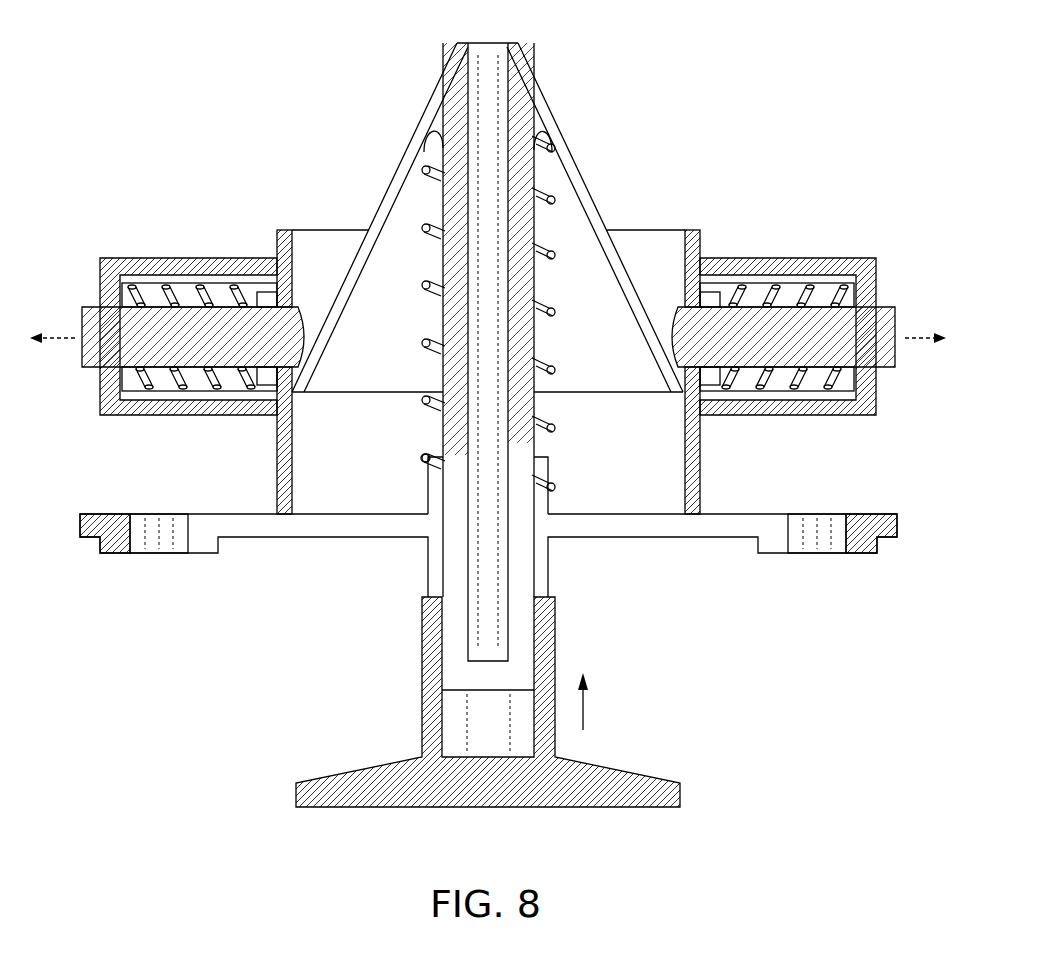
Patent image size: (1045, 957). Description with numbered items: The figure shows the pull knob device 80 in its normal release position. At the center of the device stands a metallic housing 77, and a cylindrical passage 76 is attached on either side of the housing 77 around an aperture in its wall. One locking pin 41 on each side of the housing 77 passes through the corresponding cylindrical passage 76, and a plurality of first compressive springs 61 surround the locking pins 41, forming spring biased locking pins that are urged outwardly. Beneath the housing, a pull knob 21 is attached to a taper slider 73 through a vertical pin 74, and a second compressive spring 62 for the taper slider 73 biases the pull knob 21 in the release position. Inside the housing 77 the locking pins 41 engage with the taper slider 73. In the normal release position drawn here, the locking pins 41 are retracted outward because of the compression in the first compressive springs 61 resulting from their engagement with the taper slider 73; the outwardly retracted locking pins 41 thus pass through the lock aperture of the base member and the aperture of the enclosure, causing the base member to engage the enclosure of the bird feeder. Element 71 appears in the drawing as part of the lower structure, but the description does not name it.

The pull knob device 80 is at (214, 54).
The taper slider 73 is at (546, 102).
The second compressive spring 62 is at (555, 198).
The first compressive springs 61 is at (812, 290).
The locking pin 41 is at (80, 307).
The vertical pin 74 is at (440, 430).
The housing 77 is at (700, 447).
The cylindrical passage 76 is at (830, 416).
The base plate 71 is at (273, 538).
The pull knob 21 is at (683, 800).